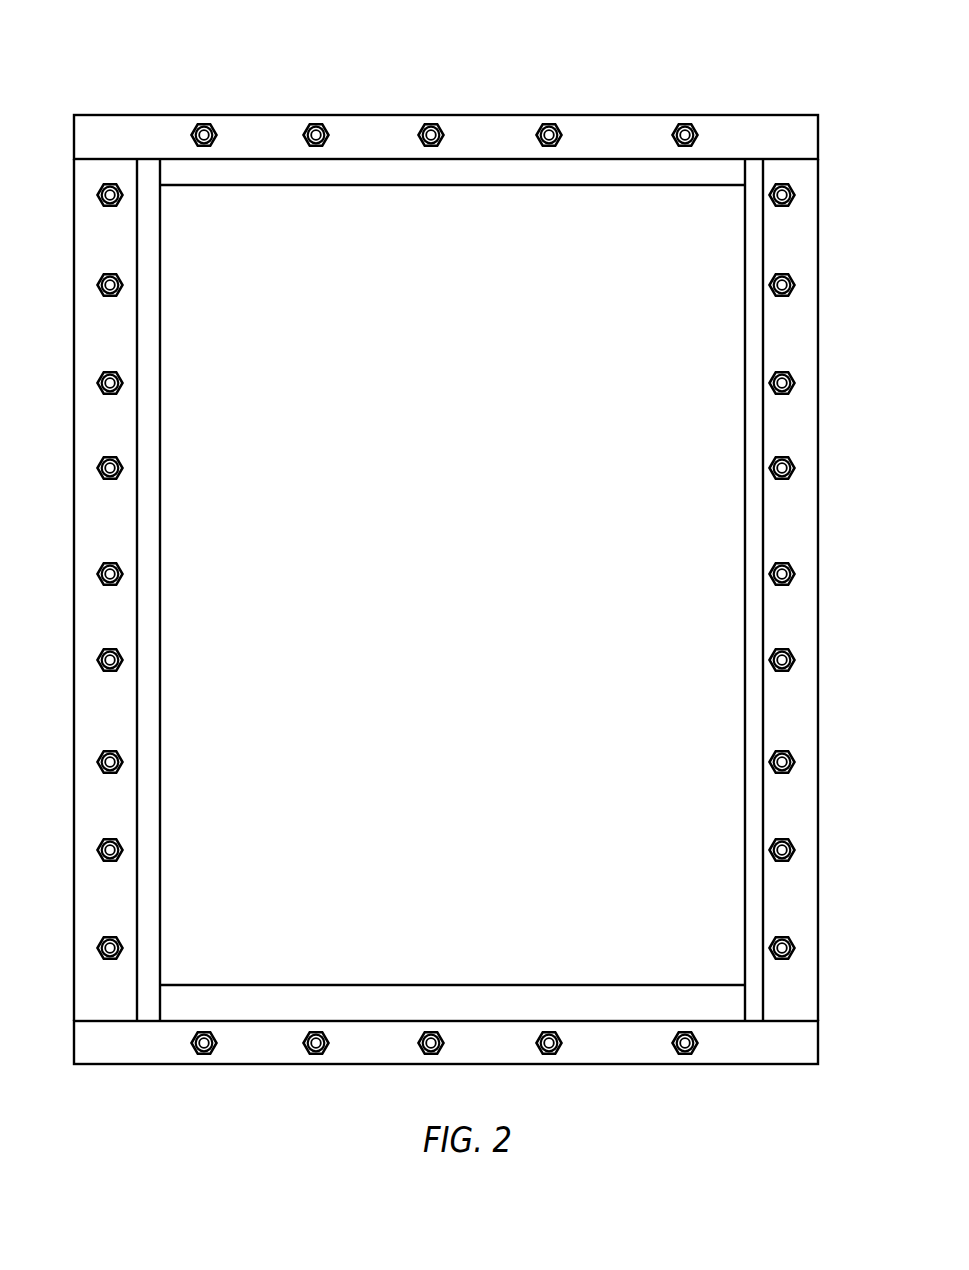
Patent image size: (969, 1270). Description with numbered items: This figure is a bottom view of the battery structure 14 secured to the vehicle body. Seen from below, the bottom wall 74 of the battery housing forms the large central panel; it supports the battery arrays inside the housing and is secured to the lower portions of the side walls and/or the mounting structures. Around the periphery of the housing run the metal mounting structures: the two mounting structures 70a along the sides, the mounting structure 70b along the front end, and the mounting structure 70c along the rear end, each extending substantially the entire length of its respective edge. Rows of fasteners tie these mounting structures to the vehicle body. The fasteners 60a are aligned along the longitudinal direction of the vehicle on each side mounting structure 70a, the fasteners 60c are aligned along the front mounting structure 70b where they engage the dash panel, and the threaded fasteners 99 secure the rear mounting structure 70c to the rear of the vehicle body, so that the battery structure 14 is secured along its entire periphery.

The battery structure 14 is at (705, 545).
The fasteners 60a is at (103, 935).
The fasteners 60c is at (560, 125).
The mounting structures 70a is at (135, 322).
The mounting structure 70b is at (200, 170).
The mounting structure 70c is at (268, 1022).
The bottom wall 74 is at (724, 950).
The fasteners 99 is at (561, 1052).